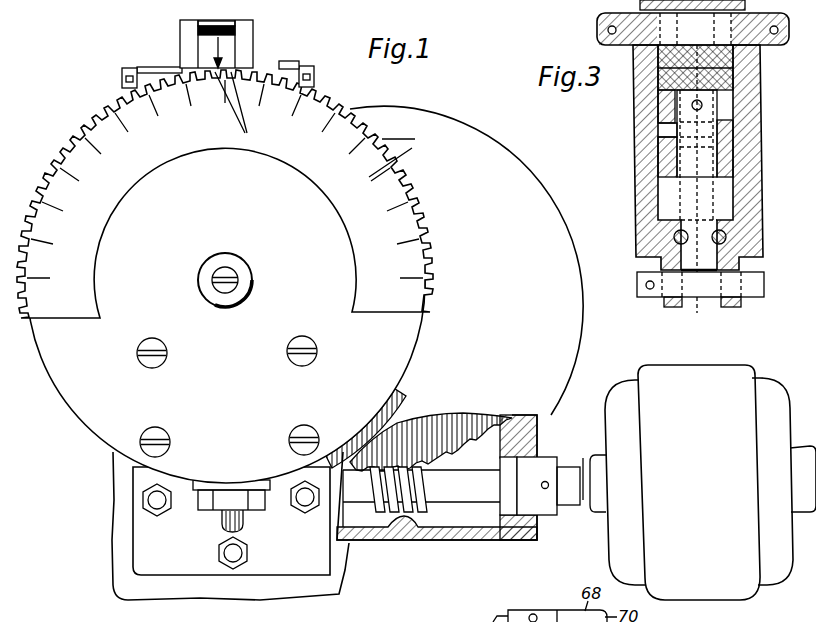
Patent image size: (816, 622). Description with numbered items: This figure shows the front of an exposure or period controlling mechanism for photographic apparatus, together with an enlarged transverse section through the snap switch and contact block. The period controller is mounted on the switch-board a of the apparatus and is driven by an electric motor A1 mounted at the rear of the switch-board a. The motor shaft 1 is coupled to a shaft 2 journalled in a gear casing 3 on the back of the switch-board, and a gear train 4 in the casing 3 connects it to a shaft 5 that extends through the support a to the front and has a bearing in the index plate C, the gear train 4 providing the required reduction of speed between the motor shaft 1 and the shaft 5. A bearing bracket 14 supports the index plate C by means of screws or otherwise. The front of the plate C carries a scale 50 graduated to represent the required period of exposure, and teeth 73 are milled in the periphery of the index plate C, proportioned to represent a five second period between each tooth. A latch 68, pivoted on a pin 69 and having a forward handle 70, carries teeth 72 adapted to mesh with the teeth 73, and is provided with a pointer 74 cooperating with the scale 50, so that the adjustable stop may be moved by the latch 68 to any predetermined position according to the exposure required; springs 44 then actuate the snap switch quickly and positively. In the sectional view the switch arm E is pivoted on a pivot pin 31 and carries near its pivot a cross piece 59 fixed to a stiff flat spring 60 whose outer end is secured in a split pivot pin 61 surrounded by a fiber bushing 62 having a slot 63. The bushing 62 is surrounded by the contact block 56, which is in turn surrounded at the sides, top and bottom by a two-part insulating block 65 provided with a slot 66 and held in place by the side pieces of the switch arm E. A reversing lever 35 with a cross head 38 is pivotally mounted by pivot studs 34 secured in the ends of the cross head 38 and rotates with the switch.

In FIG. 1, the motor shaft 1 is at (553, 474).
In FIG. 1, the shaft 2 is at (421, 489).
In FIG. 1, the gear casing 3 is at (466, 260).
In FIG. 1, the gear train 4 is at (482, 420).
In FIG. 3, the gear train 4 is at (640, 6).
In FIG. 1, the shaft 5 is at (478, 621).
In FIG. 1, the bearing bracket 14 is at (231, 521).
In FIG. 3, the pivot pin 31 is at (765, 278).
In FIG. 1, the pivot studs 34 is at (127, 68).
In FIG. 1, the reversing lever 35 is at (292, 62).
In FIG. 1, the cross head 38 is at (170, 58).
In FIG. 1, the springs 44 is at (522, 611).
In FIG. 1, the scale 50 is at (225, 194).
In FIG. 3, the contact block 56 is at (735, 63).
In FIG. 3, the cross piece 59 is at (744, 196).
In FIG. 3, the flat spring 60 is at (697, 179).
In FIG. 3, the split pivot pin 61 is at (659, 113).
In FIG. 3, the fiber bushing 62 is at (735, 125).
In FIG. 3, the slot 63 is at (660, 138).
In FIG. 3, the insulating block 65 is at (659, 58).
In FIG. 3, the slot 66 is at (662, 178).
In FIG. 1, the latch 68 is at (228, 54).
In FIG. 1, the pin 69 is at (540, 614).
In FIG. 1, the handle 70 is at (197, 24).
In FIG. 1, the teeth 72 is at (240, 109).
In FIG. 1, the teeth 73 is at (403, 156).
In FIG. 1, the pointer 74 is at (224, 52).
In FIG. 1, the index plate C is at (226, 284).
In FIG. 3, the switch arm E is at (633, 145).
In FIG. 1, the switch-board a is at (230, 526).
In FIG. 1, the electric motor A1 is at (710, 482).